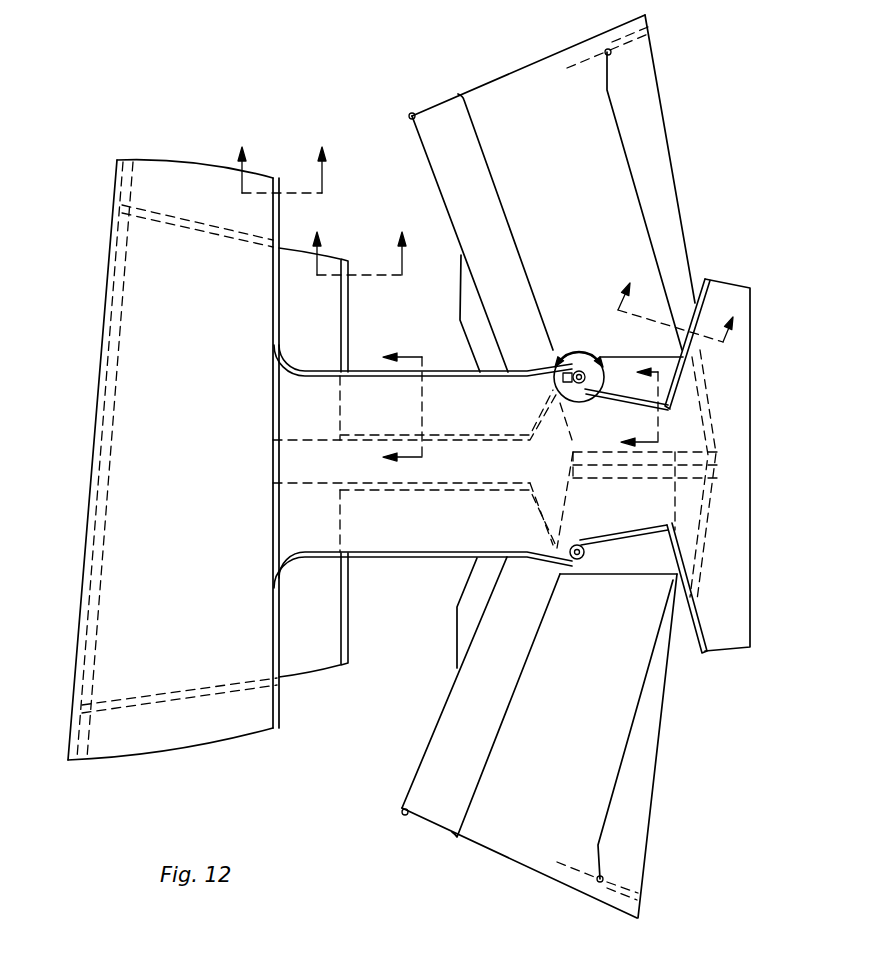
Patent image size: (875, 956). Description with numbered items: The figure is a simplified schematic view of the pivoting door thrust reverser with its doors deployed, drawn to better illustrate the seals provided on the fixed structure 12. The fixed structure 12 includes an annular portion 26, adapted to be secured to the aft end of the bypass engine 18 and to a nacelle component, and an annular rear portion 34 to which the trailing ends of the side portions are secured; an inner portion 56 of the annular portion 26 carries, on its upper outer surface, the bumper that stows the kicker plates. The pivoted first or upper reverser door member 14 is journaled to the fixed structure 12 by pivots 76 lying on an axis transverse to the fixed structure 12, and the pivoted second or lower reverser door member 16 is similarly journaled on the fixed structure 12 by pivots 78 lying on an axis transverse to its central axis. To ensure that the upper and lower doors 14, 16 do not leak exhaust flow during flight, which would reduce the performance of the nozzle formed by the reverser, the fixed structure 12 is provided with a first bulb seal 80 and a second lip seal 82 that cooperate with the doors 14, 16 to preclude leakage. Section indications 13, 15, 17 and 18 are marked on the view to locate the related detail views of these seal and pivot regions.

The fixed structure 12 is at (176, 160).
The section line 13- 13 is at (282, 157).
The upper reverser door member 14 is at (723, 108).
The section line 15- 15 is at (387, 408).
The lower reverser door member 16 is at (708, 781).
The rotation direction arrow 17 is at (583, 350).
The bypass engine 18 is at (624, 408).
The annular portion 26 is at (346, 576).
The annular rear portion 34 is at (752, 322).
The inner portion 56 is at (307, 673).
The pivots 76 is at (555, 379).
The pivots 78 is at (582, 560).
The first bulb seal 80 is at (272, 304).
The second lip seal 82 is at (349, 297).